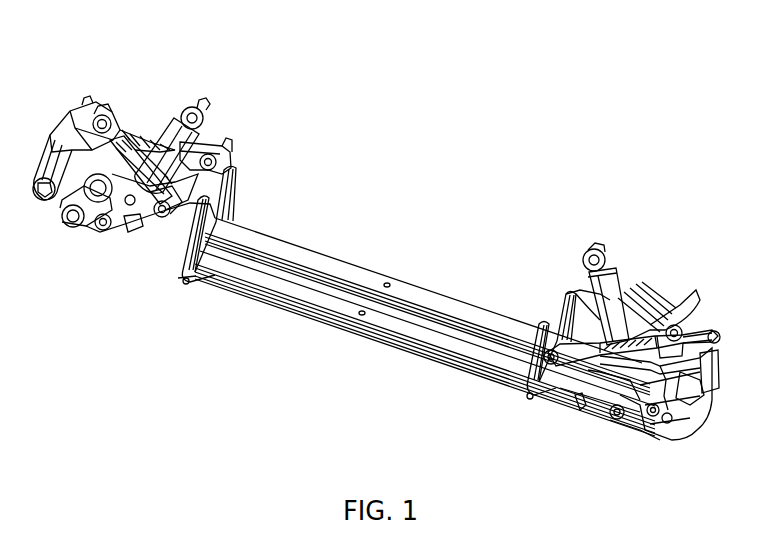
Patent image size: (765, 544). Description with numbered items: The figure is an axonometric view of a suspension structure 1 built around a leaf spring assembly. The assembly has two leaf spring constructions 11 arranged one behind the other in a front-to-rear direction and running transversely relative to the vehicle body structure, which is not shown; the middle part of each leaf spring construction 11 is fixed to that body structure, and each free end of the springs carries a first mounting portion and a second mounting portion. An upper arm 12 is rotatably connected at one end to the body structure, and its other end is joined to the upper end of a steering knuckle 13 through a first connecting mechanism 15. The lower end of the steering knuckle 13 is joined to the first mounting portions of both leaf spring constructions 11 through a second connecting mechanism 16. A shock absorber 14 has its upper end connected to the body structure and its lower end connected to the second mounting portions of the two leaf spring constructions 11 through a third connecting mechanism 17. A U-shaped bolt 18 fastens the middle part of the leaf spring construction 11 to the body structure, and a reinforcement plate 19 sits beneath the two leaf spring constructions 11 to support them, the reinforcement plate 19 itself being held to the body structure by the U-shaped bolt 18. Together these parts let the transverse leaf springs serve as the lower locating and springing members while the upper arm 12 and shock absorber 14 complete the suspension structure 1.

The suspension structure 1 is at (408, 34).
The leaf spring construction 11 is at (366, 263).
The upper arm 12 is at (220, 138).
The steering knuckle 13 is at (48, 157).
The shock absorber 14 is at (202, 96).
The first connecting mechanism 15 is at (104, 120).
The second connecting mechanism 16 is at (53, 207).
The third connecting mechanism 17 is at (117, 235).
The U-shaped bolt 18 is at (236, 178).
The reinforcement plate 19 is at (192, 281).